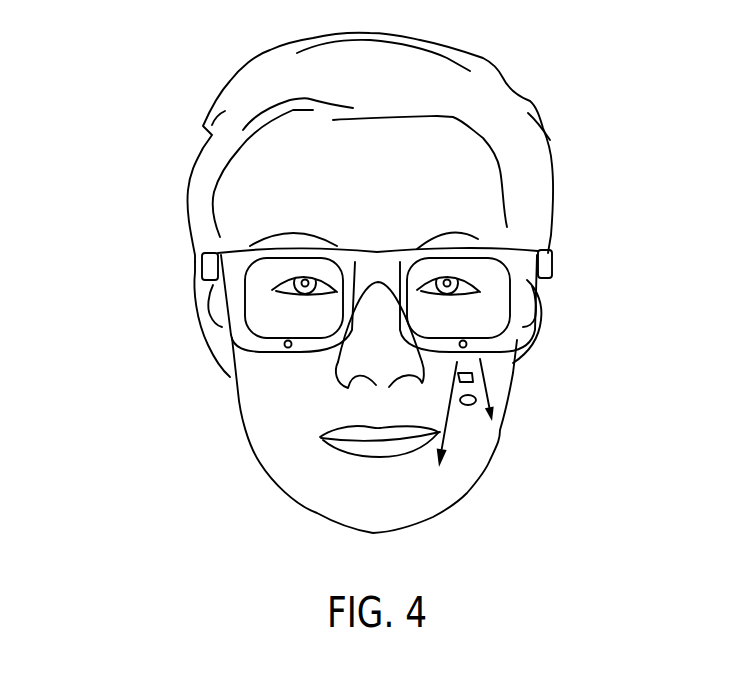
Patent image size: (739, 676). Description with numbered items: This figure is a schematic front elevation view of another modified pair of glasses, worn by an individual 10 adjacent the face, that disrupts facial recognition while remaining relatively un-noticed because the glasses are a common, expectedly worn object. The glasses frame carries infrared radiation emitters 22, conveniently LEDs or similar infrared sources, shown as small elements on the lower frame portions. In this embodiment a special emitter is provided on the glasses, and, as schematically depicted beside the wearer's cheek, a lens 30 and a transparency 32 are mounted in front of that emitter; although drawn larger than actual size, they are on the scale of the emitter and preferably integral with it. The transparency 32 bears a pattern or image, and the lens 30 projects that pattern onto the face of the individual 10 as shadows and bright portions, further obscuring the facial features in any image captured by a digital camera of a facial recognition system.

The individual 10 is at (168, 83).
The infrared radiation emitter 22 is at (237, 399).
The transparency 32 is at (474, 378).
The lens 30 is at (470, 405).